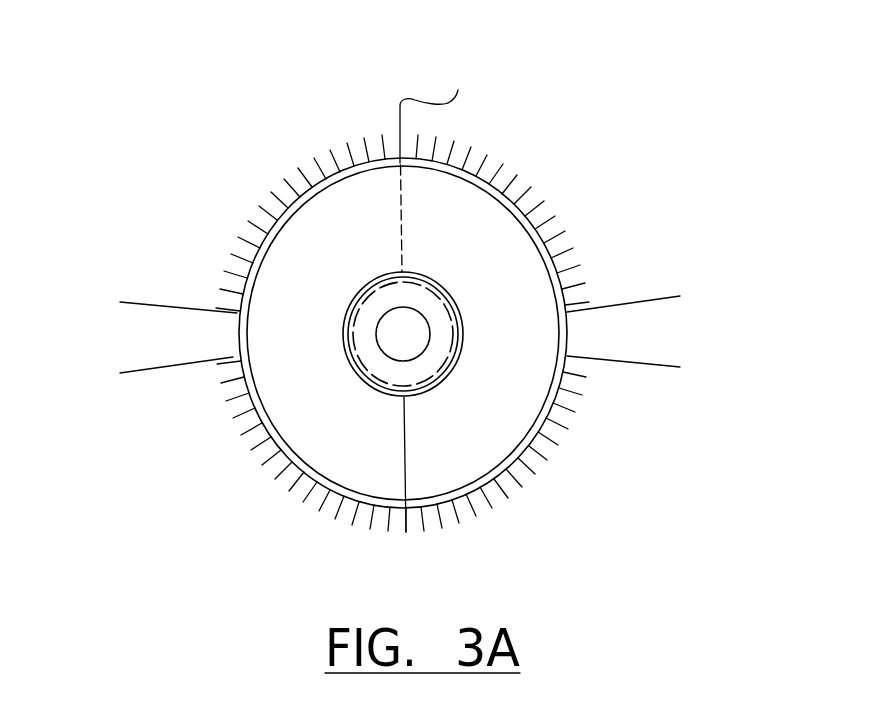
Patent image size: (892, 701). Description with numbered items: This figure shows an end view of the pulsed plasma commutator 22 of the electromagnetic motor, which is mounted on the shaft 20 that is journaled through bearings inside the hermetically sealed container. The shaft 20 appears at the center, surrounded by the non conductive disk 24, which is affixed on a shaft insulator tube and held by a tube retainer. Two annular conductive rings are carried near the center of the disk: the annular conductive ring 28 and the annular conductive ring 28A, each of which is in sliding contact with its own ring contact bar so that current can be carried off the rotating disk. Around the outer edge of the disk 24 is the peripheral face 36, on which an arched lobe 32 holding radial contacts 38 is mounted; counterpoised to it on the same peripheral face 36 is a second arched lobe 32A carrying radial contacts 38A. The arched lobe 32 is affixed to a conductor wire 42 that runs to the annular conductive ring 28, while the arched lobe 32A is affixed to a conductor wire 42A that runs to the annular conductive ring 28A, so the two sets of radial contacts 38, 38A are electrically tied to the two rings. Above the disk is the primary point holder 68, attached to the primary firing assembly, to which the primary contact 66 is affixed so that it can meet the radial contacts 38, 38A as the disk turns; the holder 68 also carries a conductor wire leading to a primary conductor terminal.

The shaft 20 is at (407, 332).
The pulsed plasma commutator 22 is at (277, 530).
The non conductive disk 24 is at (303, 255).
The annular conductive ring 28 is at (372, 277).
The annular conductive ring 28A is at (455, 325).
The arched lobe 32 is at (240, 357).
The arched lobe 32A is at (567, 312).
The peripheral face 36 is at (240, 335).
The radial contacts 38 is at (233, 438).
The radial contacts 38A is at (538, 190).
The conductor wire 42 is at (405, 450).
The conductor wire 42A is at (403, 210).
The primary contact 66 is at (398, 118).
The primary point holder 68 is at (438, 100).